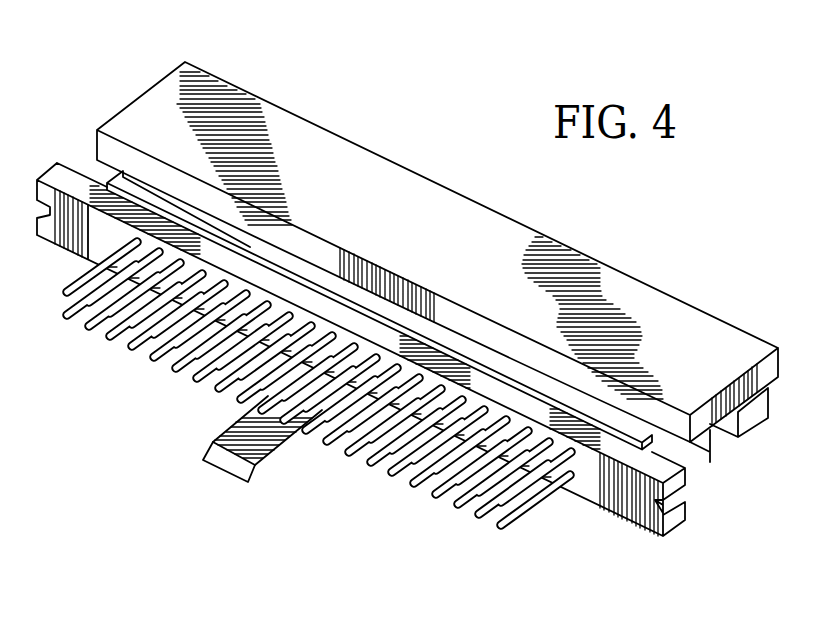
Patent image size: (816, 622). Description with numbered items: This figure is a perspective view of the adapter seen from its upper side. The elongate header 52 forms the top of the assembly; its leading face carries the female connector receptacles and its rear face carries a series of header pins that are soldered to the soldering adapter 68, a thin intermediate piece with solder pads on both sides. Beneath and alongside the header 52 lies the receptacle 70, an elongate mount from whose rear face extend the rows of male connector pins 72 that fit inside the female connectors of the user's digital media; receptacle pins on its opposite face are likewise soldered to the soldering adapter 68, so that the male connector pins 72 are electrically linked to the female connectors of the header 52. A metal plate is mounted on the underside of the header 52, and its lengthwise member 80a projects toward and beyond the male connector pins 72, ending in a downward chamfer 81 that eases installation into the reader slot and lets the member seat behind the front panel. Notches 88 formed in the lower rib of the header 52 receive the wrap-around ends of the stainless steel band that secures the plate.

The header 52 is at (342, 188).
The soldering adapter 68 is at (425, 333).
The receptacle 70 is at (597, 492).
The male connector pins 72 is at (492, 512).
The lengthwise member 80a is at (281, 437).
The downward chamfer 81 is at (238, 462).
The notches 88 is at (720, 432).